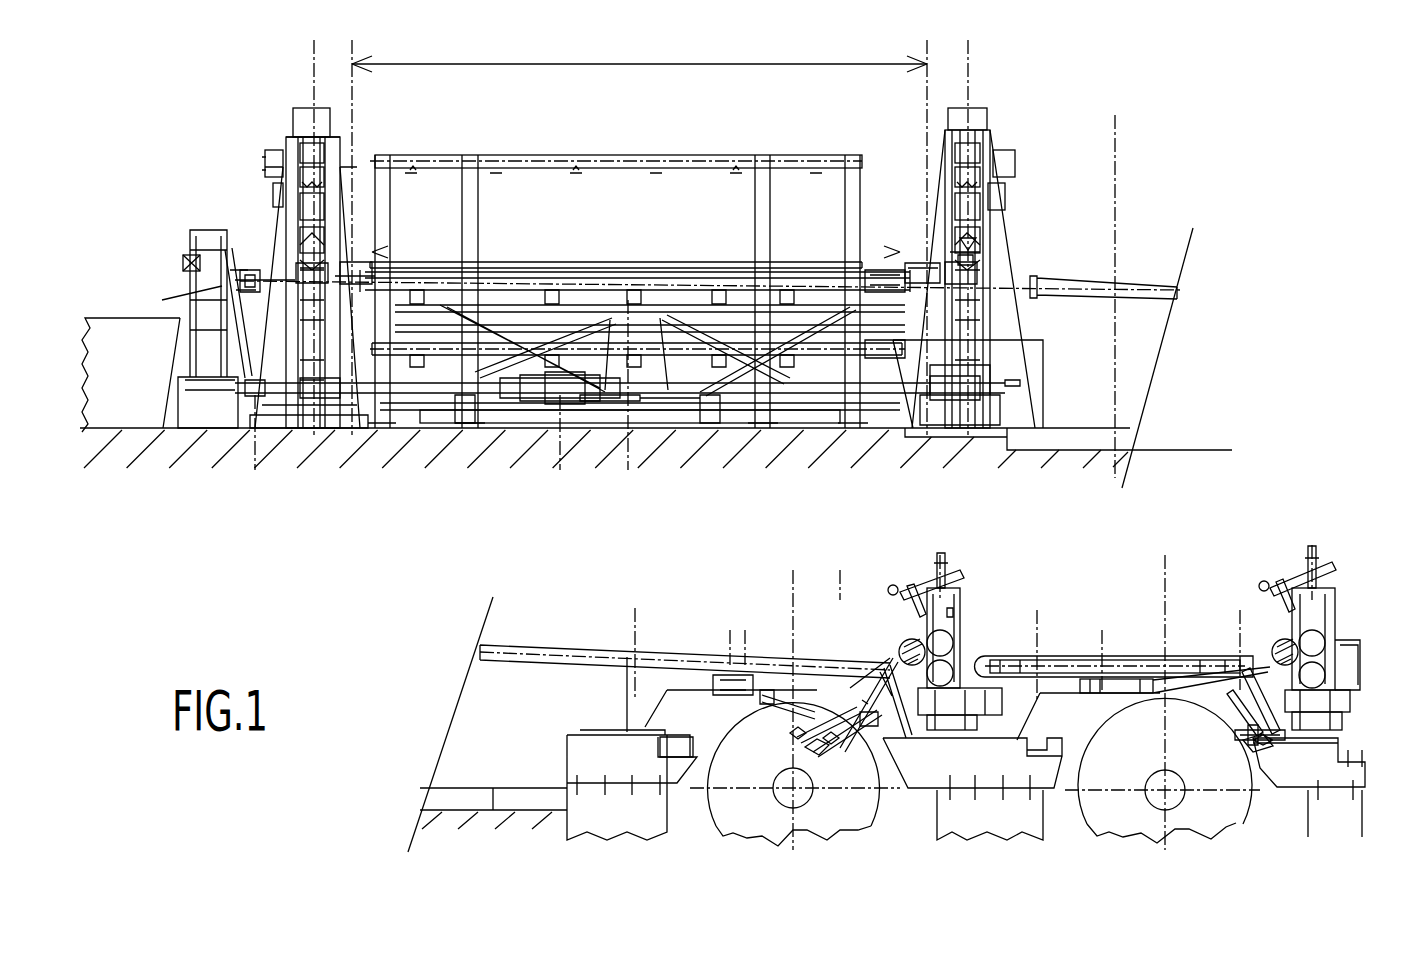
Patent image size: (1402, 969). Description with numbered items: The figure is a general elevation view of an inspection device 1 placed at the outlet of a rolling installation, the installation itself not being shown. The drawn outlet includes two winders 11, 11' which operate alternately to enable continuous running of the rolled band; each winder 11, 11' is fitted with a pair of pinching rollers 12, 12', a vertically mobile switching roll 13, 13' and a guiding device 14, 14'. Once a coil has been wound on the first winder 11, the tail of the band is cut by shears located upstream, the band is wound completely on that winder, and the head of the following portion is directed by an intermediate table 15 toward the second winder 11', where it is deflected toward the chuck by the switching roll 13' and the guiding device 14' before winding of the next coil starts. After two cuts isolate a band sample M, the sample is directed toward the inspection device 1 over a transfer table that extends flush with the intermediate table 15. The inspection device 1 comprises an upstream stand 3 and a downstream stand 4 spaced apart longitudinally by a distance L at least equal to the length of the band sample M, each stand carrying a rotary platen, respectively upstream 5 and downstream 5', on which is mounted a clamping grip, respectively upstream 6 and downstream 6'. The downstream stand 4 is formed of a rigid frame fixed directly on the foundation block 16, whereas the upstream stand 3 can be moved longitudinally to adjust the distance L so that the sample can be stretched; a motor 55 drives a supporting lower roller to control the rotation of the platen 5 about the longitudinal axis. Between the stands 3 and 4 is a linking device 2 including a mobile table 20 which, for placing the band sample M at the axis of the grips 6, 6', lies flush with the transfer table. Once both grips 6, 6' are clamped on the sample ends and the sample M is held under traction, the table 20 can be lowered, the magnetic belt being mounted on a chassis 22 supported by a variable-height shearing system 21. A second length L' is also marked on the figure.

The inspection device 1 is at (471, 120).
The linking device 2 is at (586, 240).
The upstream stand 3 is at (980, 106).
The downstream stand 4 is at (314, 106).
The upstream rotary platen 5 is at (930, 191).
The downstream rotary platen 5' is at (347, 189).
The upstream clamping grip 6 is at (1002, 235).
The downstream clamping grip 6' is at (232, 299).
The first winder 11 is at (1155, 792).
The second winder 11' is at (813, 795).
The pinching rollers 12 is at (1324, 691).
The pinching rollers 12' is at (972, 696).
The switching roll 13 is at (1248, 663).
The switching roll 13' is at (876, 663).
The guiding device 14 is at (1241, 795).
The guiding device 14' is at (797, 730).
The intermediate table 15 is at (1062, 658).
The foundation block 16 is at (292, 445).
The mobile table 20 is at (822, 285).
The shearing system 21 is at (628, 400).
The chassis 22 is at (709, 400).
The motor 55 is at (550, 400).
The distance between stands L is at (639, 47).
The length L' is at (636, 234).
The band sample M is at (700, 250).